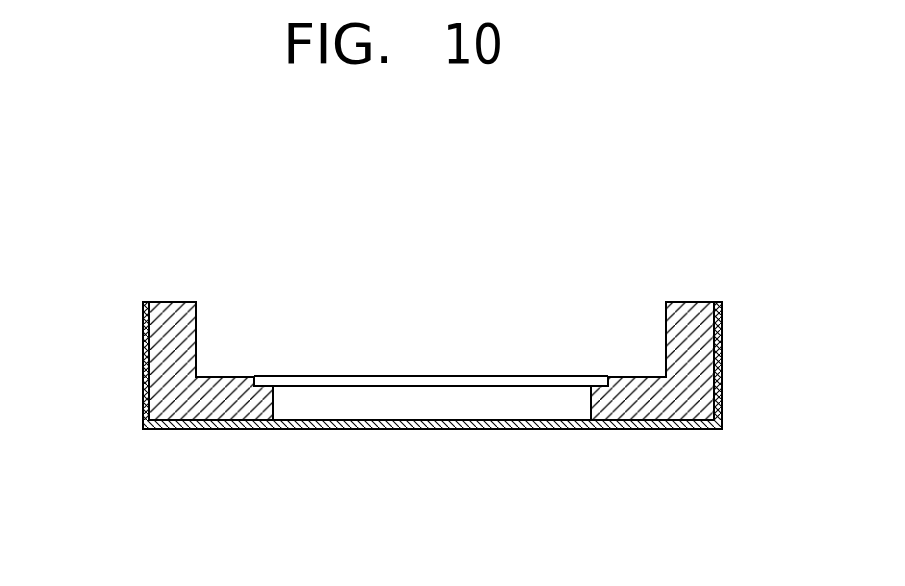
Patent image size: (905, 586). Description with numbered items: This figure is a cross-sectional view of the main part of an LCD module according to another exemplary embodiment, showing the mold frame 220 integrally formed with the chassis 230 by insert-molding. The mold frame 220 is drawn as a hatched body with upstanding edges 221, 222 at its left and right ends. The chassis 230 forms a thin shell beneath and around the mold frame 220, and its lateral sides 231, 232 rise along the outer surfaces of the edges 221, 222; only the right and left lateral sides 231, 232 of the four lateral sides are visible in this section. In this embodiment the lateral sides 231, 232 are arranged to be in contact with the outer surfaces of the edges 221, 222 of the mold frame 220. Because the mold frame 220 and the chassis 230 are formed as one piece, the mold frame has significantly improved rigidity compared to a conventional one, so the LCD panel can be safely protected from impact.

The mold frame 220 is at (635, 398).
The edge of the mold frame 221 is at (165, 325).
The edge of the mold frame 222 is at (692, 312).
The chassis 230 is at (385, 429).
The lateral side 231 is at (148, 378).
The lateral side 232 is at (722, 319).